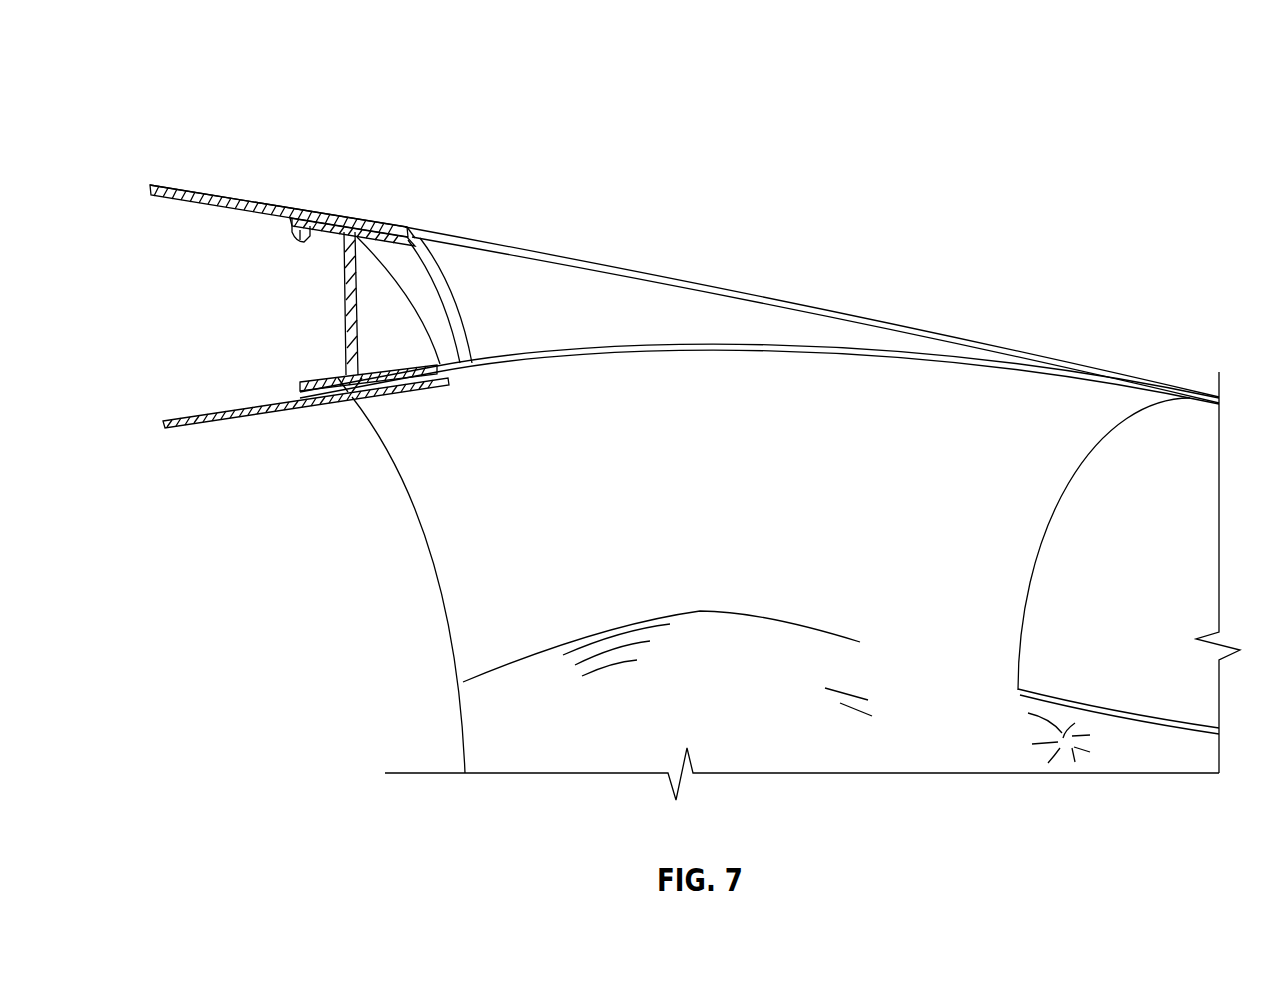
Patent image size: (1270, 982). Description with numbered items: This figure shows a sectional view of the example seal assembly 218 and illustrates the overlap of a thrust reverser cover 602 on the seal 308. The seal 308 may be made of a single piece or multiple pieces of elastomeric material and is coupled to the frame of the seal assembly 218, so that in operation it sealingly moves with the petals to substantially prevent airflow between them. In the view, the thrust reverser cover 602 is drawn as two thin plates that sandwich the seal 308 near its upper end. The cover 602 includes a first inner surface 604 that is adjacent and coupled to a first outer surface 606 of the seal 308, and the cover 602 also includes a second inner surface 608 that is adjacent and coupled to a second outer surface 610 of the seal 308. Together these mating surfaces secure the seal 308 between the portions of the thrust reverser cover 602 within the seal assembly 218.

The seal assembly 218 is at (667, 80).
The seal 308 is at (612, 263).
The thrust reverser cover 602 is at (262, 205).
The first inner surface 604 is at (277, 402).
The first outer surface 606 is at (357, 392).
The second inner surface 608 is at (245, 199).
The second outer surface 610 is at (388, 230).